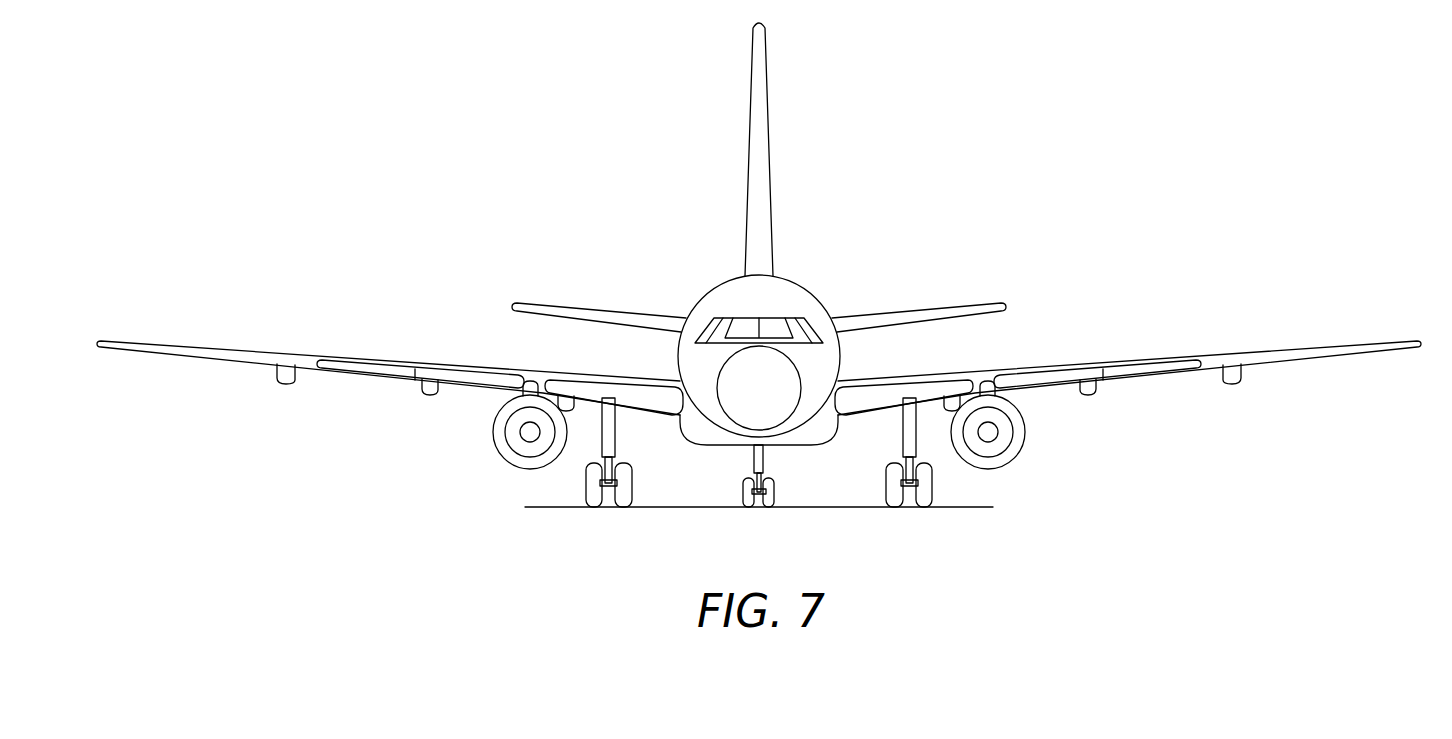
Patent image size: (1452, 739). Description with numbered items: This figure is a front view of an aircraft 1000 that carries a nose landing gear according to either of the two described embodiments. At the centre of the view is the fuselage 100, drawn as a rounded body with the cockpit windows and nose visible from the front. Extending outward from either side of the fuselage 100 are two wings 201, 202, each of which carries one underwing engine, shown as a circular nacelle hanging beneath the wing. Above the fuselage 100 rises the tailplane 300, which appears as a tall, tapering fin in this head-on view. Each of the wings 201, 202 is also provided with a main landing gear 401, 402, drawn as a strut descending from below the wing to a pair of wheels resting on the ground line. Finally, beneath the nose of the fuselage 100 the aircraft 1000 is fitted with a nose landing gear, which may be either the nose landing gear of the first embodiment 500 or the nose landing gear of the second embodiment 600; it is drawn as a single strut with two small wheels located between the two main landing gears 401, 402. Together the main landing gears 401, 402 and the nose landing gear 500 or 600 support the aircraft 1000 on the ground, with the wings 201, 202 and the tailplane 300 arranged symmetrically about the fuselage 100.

The aircraft 1000 is at (1040, 126).
The fuselage 100 is at (797, 284).
The wing 201 is at (268, 357).
The wing 202 is at (1249, 357).
The tailplane 300 is at (764, 117).
The main landing gear 401 is at (617, 443).
The main landing gear 402 is at (901, 440).
The nose landing gear of the first embodiment 500 is at (806, 498).
The nose landing gear of the second embodiment 600 is at (764, 463).